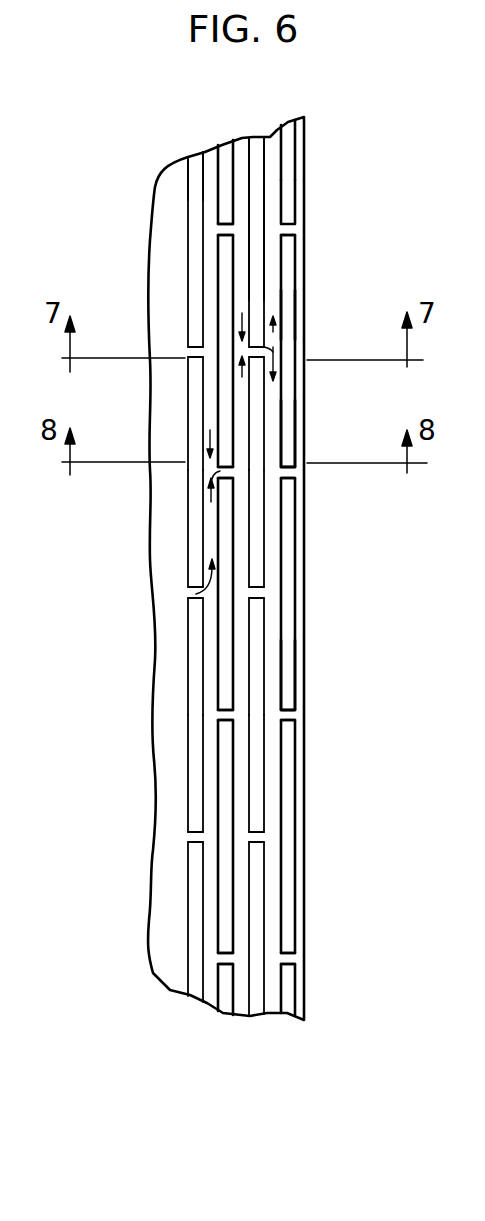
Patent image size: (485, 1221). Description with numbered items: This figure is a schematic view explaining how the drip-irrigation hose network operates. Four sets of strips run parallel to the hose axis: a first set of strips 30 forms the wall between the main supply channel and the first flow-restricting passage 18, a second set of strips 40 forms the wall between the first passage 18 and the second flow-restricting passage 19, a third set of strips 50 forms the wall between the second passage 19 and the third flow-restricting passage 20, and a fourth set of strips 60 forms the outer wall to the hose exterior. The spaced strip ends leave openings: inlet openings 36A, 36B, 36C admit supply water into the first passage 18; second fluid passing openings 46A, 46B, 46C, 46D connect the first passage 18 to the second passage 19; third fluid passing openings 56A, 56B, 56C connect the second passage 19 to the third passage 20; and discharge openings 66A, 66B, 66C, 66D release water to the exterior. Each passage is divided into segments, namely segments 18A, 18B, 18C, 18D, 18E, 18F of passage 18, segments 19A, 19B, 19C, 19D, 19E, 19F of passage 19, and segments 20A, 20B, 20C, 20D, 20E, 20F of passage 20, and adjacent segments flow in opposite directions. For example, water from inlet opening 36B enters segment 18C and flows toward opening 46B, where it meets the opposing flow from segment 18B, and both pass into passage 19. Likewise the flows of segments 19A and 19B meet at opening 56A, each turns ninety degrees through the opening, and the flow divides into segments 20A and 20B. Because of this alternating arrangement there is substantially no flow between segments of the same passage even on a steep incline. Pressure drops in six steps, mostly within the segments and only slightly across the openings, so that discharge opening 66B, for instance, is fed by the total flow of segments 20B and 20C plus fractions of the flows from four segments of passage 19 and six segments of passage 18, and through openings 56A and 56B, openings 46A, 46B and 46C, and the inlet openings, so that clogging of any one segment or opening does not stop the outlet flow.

The first flow-restricting passage 18 is at (210, 158).
The second flow-restricting passage 19 is at (243, 142).
The third flow-restricting passage 20 is at (276, 137).
The first set of strips 30 is at (205, 388).
The second set of strips 40 is at (228, 196).
The third set of strips 50 is at (255, 208).
The fourth set of strips 60 is at (292, 315).
The segment of first flow restricting passage 18A is at (210, 288).
The segment of first flow restricting passage 18B is at (205, 415).
The segment of first flow restricting passage 18C is at (207, 538).
The segment of first flow restricting passage 18D is at (205, 650).
The segment of first flow restricting passage 18E is at (208, 772).
The segment of first flow restricting passage 18F is at (210, 902).
The segment of second flow restricting passage 19A is at (240, 268).
The segment of second flow restricting passage 19B is at (240, 410).
The segment of second flow restricting passage 19C is at (237, 510).
The segment of second flow restricting passage 19D is at (248, 641).
The segment of second flow restricting passage 19E is at (240, 740).
The segment of second flow restricting passage 19F is at (243, 890).
The segment of third flow restricting passage 20A is at (270, 285).
The segment of third flow restricting passage 20B is at (275, 432).
The segment of third flow restricting passage 20C is at (273, 531).
The segment of third flow restricting passage 20D is at (275, 671).
The segment of third flow restricting passage 20E is at (272, 768).
The segment of third flow restricting passage 20F is at (273, 908).
The inlet opening 36A is at (190, 353).
The inlet opening 36B is at (187, 593).
The inlet opening 36C is at (202, 835).
The second inlet fluid passing opening 46A is at (222, 231).
The second inlet fluid passing opening 46B is at (220, 475).
The second inlet fluid passing opening 46C is at (220, 713).
The second inlet fluid passing opening 46D is at (222, 961).
The third fluid passing opening 56A is at (267, 350).
The third fluid passing opening 56B is at (260, 594).
The third fluid passing opening 56C is at (263, 835).
The discharge fluid passing opening 66A is at (293, 230).
The discharge fluid passing opening 66B is at (297, 476).
The discharge fluid passing opening 66C is at (293, 713).
The discharge fluid passing opening 66D is at (293, 960).